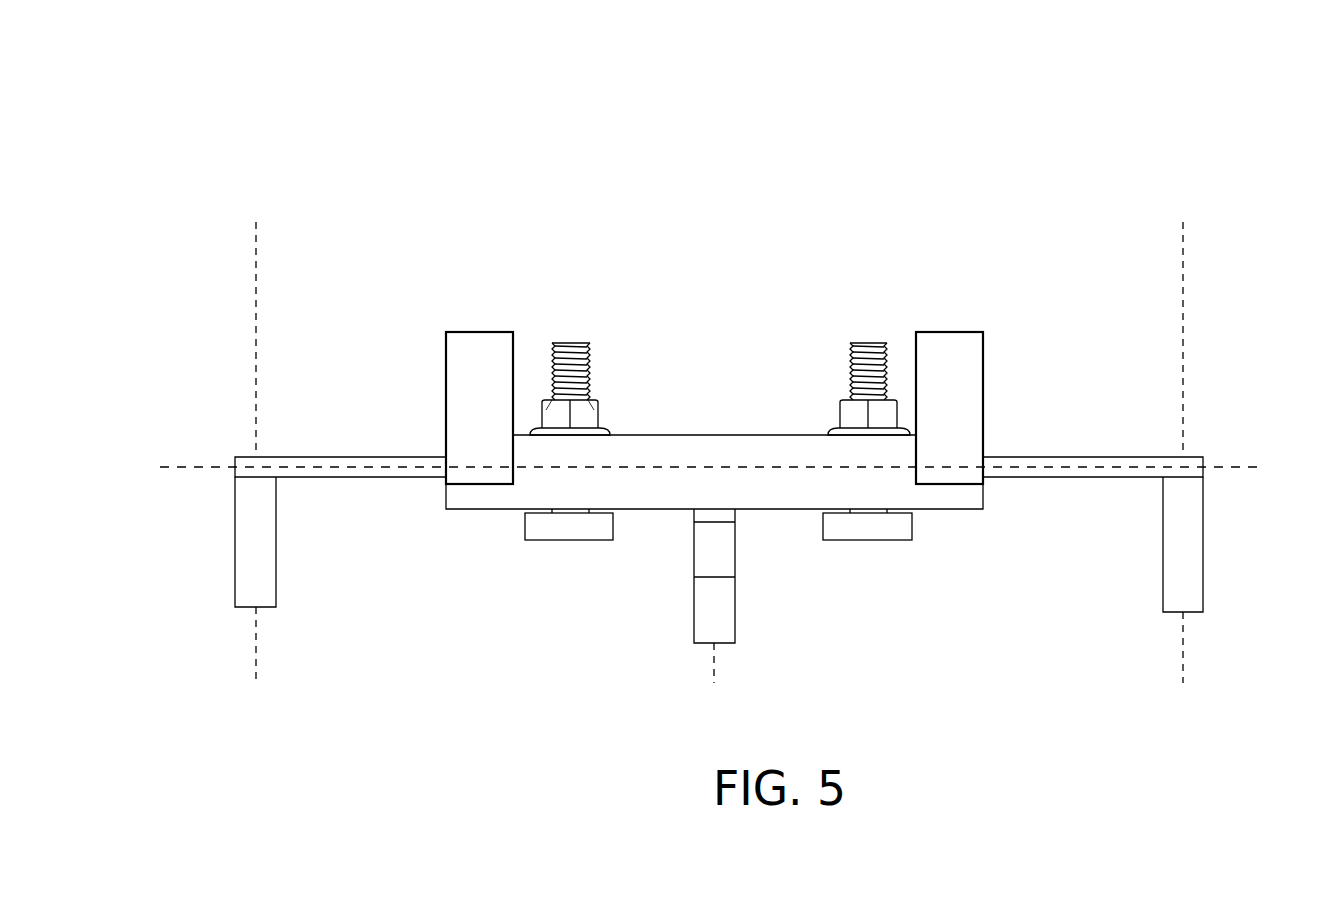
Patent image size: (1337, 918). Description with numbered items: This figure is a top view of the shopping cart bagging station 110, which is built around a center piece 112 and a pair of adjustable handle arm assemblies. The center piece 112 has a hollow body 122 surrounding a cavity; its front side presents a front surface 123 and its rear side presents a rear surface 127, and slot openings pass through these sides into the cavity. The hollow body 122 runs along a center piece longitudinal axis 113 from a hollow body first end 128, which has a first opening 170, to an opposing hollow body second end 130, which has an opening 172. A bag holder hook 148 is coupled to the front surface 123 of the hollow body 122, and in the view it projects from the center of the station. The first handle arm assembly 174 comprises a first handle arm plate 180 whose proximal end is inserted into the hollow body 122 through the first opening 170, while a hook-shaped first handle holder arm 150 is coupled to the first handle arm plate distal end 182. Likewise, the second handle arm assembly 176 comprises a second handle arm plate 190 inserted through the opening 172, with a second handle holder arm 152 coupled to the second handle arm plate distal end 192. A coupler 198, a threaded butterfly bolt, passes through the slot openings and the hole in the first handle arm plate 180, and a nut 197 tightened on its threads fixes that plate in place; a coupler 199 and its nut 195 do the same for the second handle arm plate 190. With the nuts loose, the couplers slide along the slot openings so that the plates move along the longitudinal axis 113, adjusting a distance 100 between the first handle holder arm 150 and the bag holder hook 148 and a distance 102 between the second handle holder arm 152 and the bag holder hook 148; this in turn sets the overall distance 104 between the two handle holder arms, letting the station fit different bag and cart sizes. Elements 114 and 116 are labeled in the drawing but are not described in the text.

The distance 100 is at (714, 683).
The distance 102 is at (714, 683).
The distance 104 is at (256, 219).
The shopping cart bagging station 110 is at (692, 165).
The center piece 112 is at (700, 312).
The center piece longitudinal axis 113 is at (1205, 470).
The first upright block 114 is at (478, 350).
The second upright block 116 is at (943, 347).
The hollow body 122 is at (693, 453).
The front surface 123 is at (653, 509).
The rear surface 127 is at (730, 435).
The hollow body first end 128 is at (445, 535).
The hollow body second end 130 is at (982, 530).
The bag holder hook 148 is at (722, 608).
The first handle holder arm 150 is at (262, 583).
The second handle holder arm 152 is at (1172, 588).
The first opening 170 is at (437, 448).
The opening 172 is at (997, 500).
The first handle arm assembly 174 is at (297, 418).
The second handle arm assembly 176 is at (1117, 395).
The first handle arm plate 180 is at (350, 467).
The first handle arm plate distal end 182 is at (233, 455).
The second handle arm plate 190 is at (1078, 470).
The second handle arm plate distal end 192 is at (1208, 452).
The nut 195 is at (850, 418).
The nut 197 is at (585, 418).
The coupler 198 is at (570, 530).
The coupler 199 is at (865, 530).